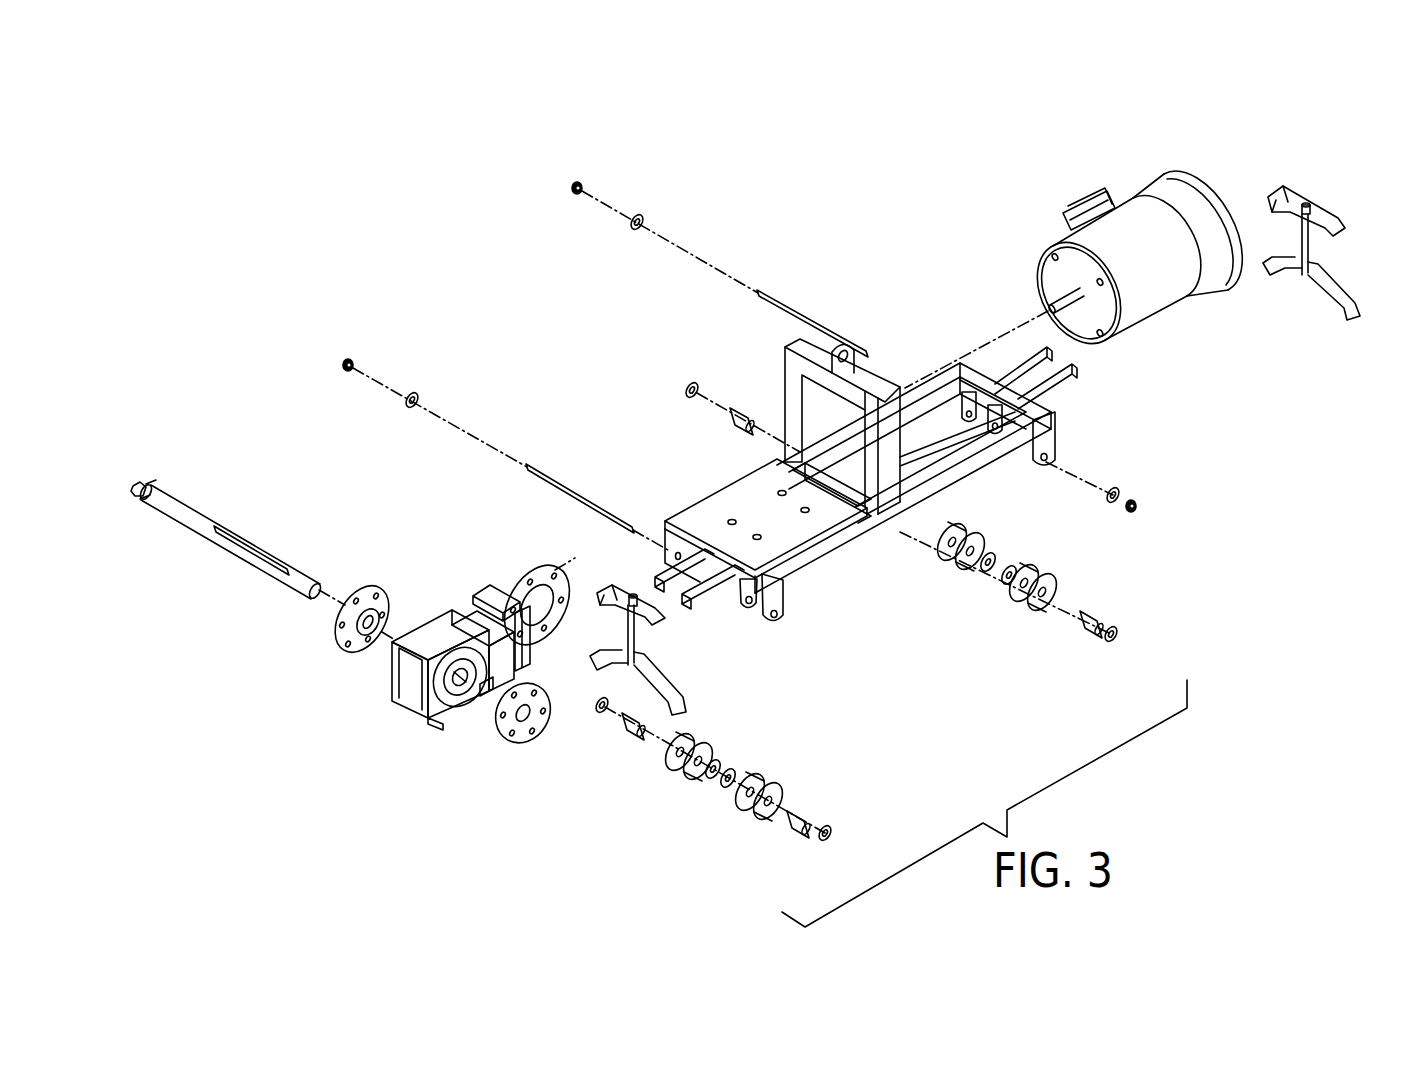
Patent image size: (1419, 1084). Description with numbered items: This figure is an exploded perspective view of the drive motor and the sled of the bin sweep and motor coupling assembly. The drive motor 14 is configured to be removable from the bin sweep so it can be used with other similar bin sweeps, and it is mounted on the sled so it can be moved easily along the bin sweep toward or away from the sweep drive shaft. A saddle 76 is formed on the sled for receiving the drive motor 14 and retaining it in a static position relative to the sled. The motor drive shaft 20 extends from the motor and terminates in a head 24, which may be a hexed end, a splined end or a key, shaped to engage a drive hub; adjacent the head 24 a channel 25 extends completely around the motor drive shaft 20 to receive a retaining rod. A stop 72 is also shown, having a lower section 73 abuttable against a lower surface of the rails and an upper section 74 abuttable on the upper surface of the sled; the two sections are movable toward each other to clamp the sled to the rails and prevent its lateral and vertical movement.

The drive motor 14 is at (1130, 215).
The motor drive shaft 20 is at (198, 515).
The head 24 is at (134, 485).
The channel 25 is at (145, 483).
The stop 72 is at (1312, 258).
The lower section 73 is at (1338, 318).
The upper section 74 is at (1277, 195).
The saddle 76 is at (785, 352).